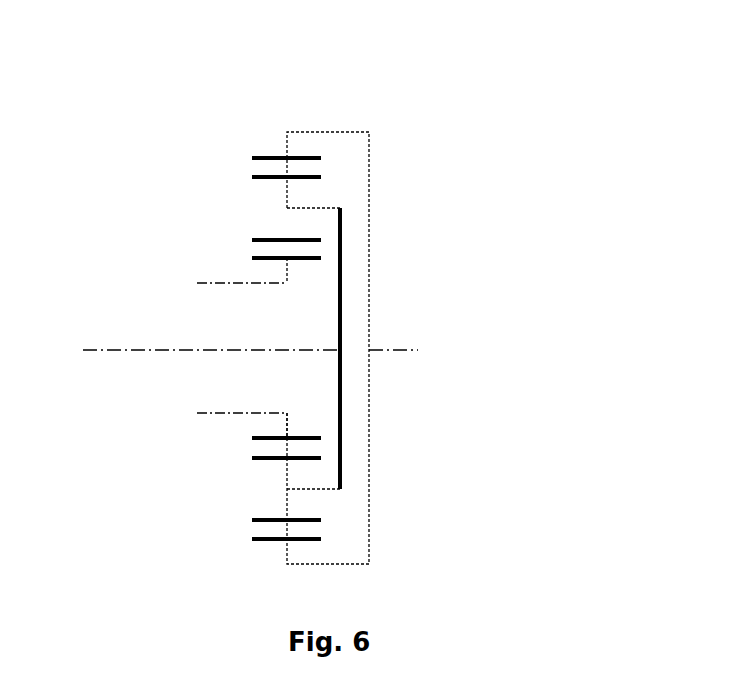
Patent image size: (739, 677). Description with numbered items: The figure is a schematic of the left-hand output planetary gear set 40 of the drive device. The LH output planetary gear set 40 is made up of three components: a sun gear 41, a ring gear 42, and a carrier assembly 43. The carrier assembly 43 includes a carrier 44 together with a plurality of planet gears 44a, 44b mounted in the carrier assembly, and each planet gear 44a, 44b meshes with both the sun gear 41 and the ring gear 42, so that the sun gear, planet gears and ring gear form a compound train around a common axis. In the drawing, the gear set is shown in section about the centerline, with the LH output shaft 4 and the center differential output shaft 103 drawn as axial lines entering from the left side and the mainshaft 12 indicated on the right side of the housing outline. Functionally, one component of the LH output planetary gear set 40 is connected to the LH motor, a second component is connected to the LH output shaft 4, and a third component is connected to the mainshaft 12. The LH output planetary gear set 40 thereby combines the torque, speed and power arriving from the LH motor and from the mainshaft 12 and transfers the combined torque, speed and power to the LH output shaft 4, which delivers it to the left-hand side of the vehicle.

The LH output planetary 40 is at (221, 88).
The sun gear 41 is at (270, 260).
The ring gear 42 is at (270, 156).
The carrier assembly 43 is at (520, 245).
The carrier 44 is at (343, 316).
The planet gear 44a is at (305, 179).
The planet gear 44b is at (308, 522).
The LH output shaft 4 is at (140, 350).
The mainshaft 12 is at (403, 353).
The center differential output shaft 103 is at (217, 414).